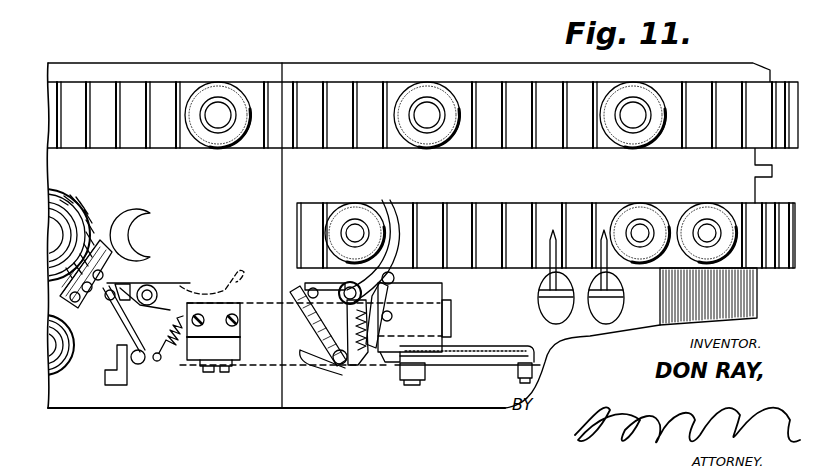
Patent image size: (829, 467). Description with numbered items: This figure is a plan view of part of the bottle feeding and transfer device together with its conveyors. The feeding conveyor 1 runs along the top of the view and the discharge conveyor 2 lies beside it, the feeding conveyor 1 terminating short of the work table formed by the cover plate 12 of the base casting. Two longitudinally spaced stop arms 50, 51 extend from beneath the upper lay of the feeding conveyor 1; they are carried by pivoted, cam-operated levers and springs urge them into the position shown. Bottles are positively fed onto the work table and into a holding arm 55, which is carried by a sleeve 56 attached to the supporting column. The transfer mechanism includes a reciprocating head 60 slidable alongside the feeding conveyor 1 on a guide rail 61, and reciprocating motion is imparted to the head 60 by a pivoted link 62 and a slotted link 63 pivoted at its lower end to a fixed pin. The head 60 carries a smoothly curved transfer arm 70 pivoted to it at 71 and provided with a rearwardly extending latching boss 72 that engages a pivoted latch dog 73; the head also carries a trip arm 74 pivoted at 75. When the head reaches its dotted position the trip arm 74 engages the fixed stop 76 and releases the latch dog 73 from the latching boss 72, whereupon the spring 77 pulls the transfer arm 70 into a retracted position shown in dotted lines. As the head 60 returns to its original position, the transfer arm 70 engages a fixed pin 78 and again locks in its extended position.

The feeding conveyor 1 is at (797, 203).
The discharge conveyor 2 is at (797, 82).
The cover plate 12 is at (70, 402).
The stop arm 50 is at (616, 283).
The stop arm 51 is at (542, 276).
The holding arm 55 is at (110, 208).
The sleeve 56 is at (58, 197).
The reciprocating head 60 is at (432, 307).
The guide rail 61 is at (451, 320).
The pivoted link 62 is at (500, 366).
The slotted link 63 is at (476, 358).
The transfer arm 70 is at (236, 273).
The pivot 71 is at (150, 290).
The latching boss 72 is at (128, 290).
The latch dog 73 is at (312, 322).
The trip arm 74 is at (118, 345).
The pivot 75 is at (146, 364).
The fixed stop 76 is at (137, 366).
The spring 77 is at (386, 352).
The fixed pin 78 is at (394, 278).